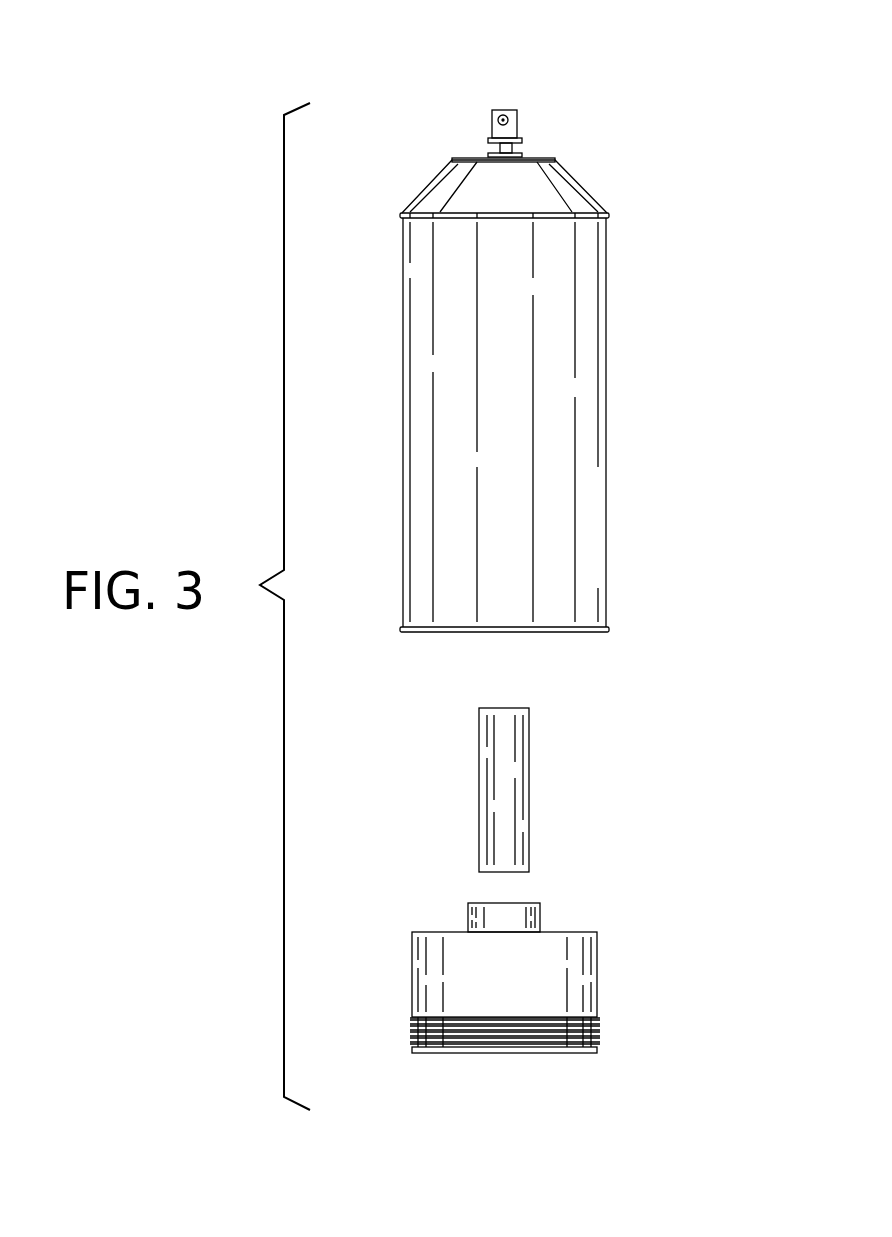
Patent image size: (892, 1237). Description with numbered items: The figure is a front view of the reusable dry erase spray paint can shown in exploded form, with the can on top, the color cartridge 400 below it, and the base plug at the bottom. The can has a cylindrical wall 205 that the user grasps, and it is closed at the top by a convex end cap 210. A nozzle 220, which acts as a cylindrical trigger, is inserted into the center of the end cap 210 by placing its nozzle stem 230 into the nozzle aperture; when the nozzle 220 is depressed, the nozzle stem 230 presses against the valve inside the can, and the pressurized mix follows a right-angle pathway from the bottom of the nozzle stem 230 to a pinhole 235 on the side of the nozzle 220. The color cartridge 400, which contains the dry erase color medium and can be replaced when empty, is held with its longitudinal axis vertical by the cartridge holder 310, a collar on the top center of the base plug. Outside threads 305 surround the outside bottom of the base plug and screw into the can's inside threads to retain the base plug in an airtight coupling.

The cylindrical wall 205 is at (567, 456).
The end cap 210 is at (540, 192).
The nozzle 220 is at (490, 133).
The nozzle stem 230 is at (510, 145).
The pinhole 235 is at (505, 121).
The color cartridge 400 is at (507, 803).
The cartridge holder 310 is at (513, 917).
The outside threads 305 is at (577, 1030).